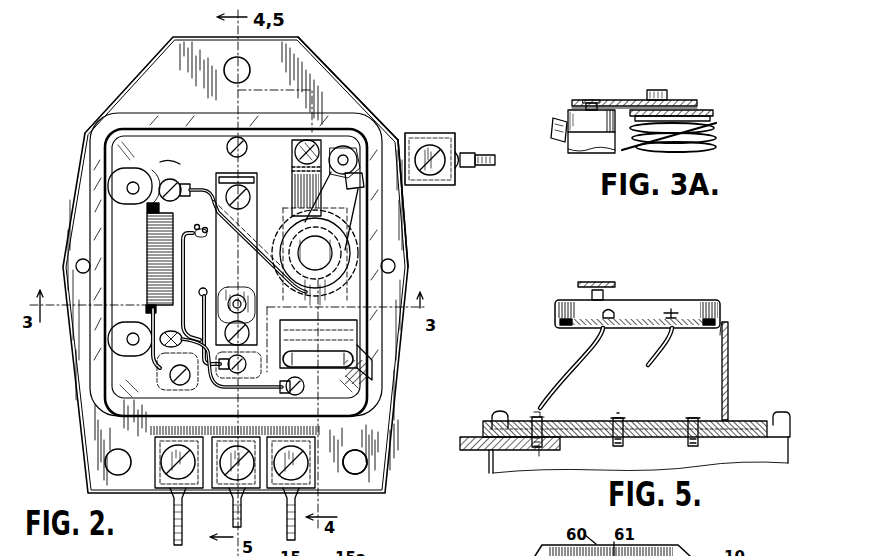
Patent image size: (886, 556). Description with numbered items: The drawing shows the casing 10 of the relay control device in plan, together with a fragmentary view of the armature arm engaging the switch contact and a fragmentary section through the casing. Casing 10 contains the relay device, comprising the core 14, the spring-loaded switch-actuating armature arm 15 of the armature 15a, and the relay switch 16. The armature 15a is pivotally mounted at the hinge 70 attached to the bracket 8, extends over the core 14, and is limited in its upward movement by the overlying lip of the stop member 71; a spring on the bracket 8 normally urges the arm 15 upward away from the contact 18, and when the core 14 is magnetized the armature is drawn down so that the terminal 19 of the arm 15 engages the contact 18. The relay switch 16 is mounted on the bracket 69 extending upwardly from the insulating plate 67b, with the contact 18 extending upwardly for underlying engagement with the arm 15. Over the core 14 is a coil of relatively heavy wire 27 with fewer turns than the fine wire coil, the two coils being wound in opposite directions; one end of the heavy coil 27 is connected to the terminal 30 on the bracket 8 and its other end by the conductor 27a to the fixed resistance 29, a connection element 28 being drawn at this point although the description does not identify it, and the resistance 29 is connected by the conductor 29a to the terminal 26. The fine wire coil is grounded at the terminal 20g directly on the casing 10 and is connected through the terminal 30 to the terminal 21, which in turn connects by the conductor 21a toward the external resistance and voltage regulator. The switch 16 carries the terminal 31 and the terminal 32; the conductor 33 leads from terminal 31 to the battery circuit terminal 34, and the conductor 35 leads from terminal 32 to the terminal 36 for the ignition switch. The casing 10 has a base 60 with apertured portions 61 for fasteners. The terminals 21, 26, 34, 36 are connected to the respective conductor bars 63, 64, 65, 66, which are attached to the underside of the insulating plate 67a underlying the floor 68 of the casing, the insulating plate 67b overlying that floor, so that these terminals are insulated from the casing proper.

In FIG. 2, the bracket 8 is at (358, 322).
In FIG. 2, the casing 10 is at (350, 78).
In FIG. 2, the core 14 is at (315, 257).
In FIG. 3A, the core 14 is at (698, 110).
In FIG. 2, the armature arm 15 is at (254, 291).
In FIG. 3A, the armature arm 15 is at (620, 100).
In FIG. 2, the armature 15a is at (340, 299).
In FIG. 3A, the armature 15a is at (672, 100).
In FIG. 2, the relay switch 16 is at (252, 214).
In FIG. 3A, the relay switch 16 is at (568, 114).
In FIG. 5, the relay switch 16 is at (632, 300).
In FIG. 3A, the contact 18 is at (585, 106).
In FIG. 5, the contact 18 is at (592, 295).
In FIG. 2, the terminal 19 is at (215, 288).
In FIG. 3A, the terminal 19 is at (574, 100).
In FIG. 5, the terminal 19 is at (594, 283).
In FIG. 2, the grounded terminal 20g is at (241, 137).
In FIG. 2, the terminal 21 is at (441, 138).
In FIG. 2, the conductor 21a is at (474, 165).
In FIG. 2, the terminal 26 is at (289, 494).
In FIG. 3A, the coil 27 is at (716, 132).
In FIG. 2, the conductor 27a is at (213, 155).
In FIG. 2, the terminal lug 28 is at (175, 184).
In FIG. 2, the fixed resistance 29 is at (147, 222).
In FIG. 2, the conductor 29a is at (203, 398).
In FIG. 2, the terminal 30 is at (340, 146).
In FIG. 2, the terminal 31 is at (183, 288).
In FIG. 5, the terminal 31 is at (622, 325).
In FIG. 2, the terminal 32 is at (199, 228).
In FIG. 5, the terminal 32 is at (676, 324).
In FIG. 2, the conductor 33 is at (248, 241).
In FIG. 5, the conductor 33 is at (555, 385).
In FIG. 2, the battery circuit terminal 34 is at (229, 494).
In FIG. 5, the battery circuit terminal 34 is at (520, 450).
In FIG. 2, the conductor 35 is at (183, 262).
In FIG. 5, the conductor 35 is at (652, 364).
In FIG. 2, the terminal 36 is at (171, 494).
In FIG. 2, the base 60 is at (394, 399).
In FIG. 5, the base 60 is at (492, 472).
In FIG. 2, the apertured portions 61 is at (362, 460).
In FIG. 2, the conductor bar 63 is at (404, 155).
In FIG. 2, the conductor bar 64 is at (310, 428).
In FIG. 2, the conductor bar 65 is at (230, 438).
In FIG. 5, the conductor bar 65 is at (548, 440).
In FIG. 2, the conductor bar 66 is at (160, 432).
In FIG. 5, the insulating plate 67a is at (722, 440).
In FIG. 2, the insulating plate 67b is at (108, 165).
In FIG. 5, the insulating plate 67b is at (733, 420).
In FIG. 5, the floor 68 is at (672, 420).
In FIG. 5, the bracket 69 is at (729, 350).
In FIG. 2, the hinge 70 is at (362, 368).
In FIG. 2, the stop member 71 is at (300, 140).